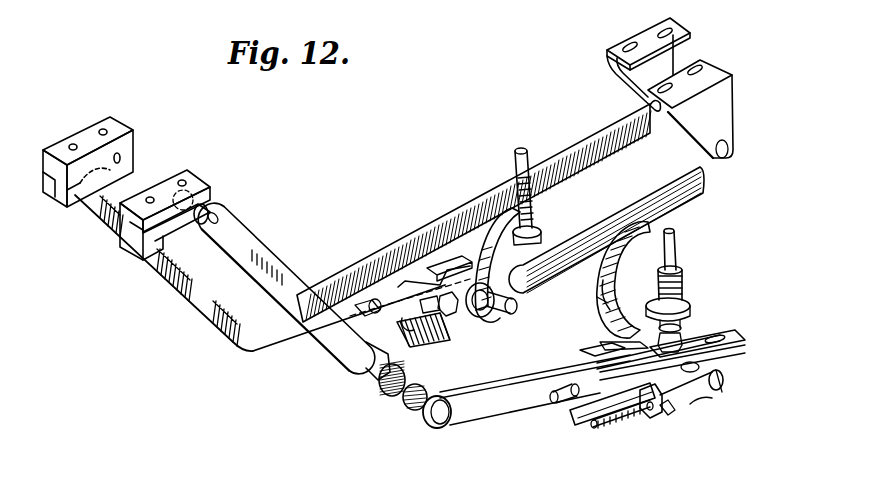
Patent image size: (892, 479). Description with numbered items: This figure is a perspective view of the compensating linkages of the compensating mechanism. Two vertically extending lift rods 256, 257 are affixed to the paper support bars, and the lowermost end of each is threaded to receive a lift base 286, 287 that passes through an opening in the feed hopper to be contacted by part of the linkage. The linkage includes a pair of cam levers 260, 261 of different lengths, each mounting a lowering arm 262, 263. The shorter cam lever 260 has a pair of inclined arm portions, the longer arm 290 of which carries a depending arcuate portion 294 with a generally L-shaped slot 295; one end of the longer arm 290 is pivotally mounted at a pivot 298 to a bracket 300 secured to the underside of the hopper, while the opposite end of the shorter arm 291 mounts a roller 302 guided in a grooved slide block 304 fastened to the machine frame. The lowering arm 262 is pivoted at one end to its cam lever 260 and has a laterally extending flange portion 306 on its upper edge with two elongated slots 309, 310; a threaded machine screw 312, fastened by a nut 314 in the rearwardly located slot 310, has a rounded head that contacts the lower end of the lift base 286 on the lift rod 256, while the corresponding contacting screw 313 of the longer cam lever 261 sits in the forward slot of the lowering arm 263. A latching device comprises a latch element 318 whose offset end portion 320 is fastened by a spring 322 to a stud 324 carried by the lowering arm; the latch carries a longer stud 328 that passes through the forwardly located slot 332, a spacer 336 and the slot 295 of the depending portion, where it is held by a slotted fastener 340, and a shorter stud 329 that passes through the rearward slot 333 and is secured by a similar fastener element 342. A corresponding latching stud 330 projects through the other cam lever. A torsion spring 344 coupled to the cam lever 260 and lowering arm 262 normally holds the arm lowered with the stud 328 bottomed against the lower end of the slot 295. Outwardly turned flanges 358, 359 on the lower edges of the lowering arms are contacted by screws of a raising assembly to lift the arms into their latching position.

The lift rod 256 is at (676, 230).
The lift rod 257 is at (527, 138).
The cam lever 260 is at (366, 380).
The cam lever 261 is at (235, 330).
The lowering arm 262 is at (484, 414).
The lowering arm 263 is at (302, 340).
The lift base 286 is at (681, 302).
The lift base 287 is at (557, 167).
The longer arm 290 is at (577, 240).
The shorter arm 291 is at (292, 283).
The depending arcuate portion 294 is at (603, 280).
The L-shaped slot 295 is at (623, 230).
The pivot 298 is at (721, 157).
The bracket 300 is at (724, 115).
The roller 302 is at (212, 208).
The grooved slide block 304 is at (208, 177).
The flange portion 306 is at (723, 353).
The elongated slot 309 is at (727, 337).
The elongated slot 310 is at (583, 362).
The machine screw 312 is at (676, 333).
The contacting screw 313 is at (540, 240).
The nut 314 is at (671, 338).
The latch element 318 is at (722, 390).
The offset end portion 320 is at (669, 408).
The spring 322 is at (630, 421).
The stud 324 is at (608, 420).
The stud 328 is at (692, 367).
The stud 329 is at (580, 350).
The latching stud 330 is at (492, 315).
The elongated slot 332 is at (690, 404).
The elongated slot 333 is at (620, 380).
The spacer 336 is at (674, 285).
The slotted fastener 340 is at (597, 297).
The fastener element 342 is at (600, 342).
The torsion spring 344 is at (382, 395).
The flange 358 is at (572, 415).
The flange 359 is at (440, 347).